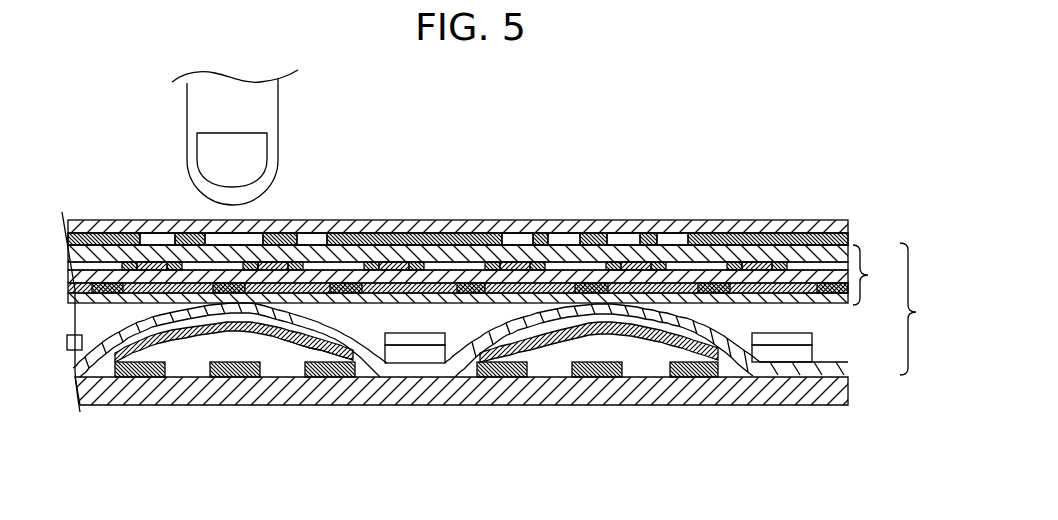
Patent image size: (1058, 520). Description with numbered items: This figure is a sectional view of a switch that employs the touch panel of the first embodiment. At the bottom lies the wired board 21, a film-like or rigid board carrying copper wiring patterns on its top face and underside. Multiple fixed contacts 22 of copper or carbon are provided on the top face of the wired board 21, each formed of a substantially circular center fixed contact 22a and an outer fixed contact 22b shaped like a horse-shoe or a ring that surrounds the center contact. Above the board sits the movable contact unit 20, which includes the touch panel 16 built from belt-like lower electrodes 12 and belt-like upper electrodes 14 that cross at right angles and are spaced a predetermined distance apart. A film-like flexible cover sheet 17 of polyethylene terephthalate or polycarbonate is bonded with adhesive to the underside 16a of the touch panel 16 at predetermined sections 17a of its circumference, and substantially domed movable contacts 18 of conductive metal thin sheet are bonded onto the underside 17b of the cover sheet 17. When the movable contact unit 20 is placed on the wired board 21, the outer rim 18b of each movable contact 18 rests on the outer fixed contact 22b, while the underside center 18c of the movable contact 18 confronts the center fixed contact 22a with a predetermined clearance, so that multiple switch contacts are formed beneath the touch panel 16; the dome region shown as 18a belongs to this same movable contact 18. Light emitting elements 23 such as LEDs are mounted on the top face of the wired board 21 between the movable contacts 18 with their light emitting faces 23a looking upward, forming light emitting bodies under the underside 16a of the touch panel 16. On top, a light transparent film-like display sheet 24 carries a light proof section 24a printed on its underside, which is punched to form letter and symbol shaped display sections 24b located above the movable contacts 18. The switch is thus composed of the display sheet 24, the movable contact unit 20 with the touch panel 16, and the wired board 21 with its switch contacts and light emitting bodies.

The lower electrodes 12 is at (583, 300).
The upper electrodes 14 is at (387, 240).
The touch panel 16 is at (486, 256).
The underside of touch panel 16a is at (773, 305).
The cover sheet 17 is at (740, 352).
The predetermined sections of cover sheet circumference 17a is at (460, 319).
The underside of cover sheet 17b is at (462, 368).
The movable contact 18 is at (218, 404).
The dome right portion 18a is at (293, 345).
The outer rim of movable contact 18b is at (118, 377).
The underside center of movable contact 18c is at (237, 335).
The movable contact unit 20 is at (510, 328).
The wired board 21 is at (263, 382).
The fixed contacts 22 is at (464, 435).
The center fixed contact 22a is at (592, 380).
The outer fixed contact 22b is at (681, 408).
The light emitting elements 23 is at (591, 320).
The light emitting faces 23a is at (427, 335).
The display sheet 24 is at (748, 230).
The light proof section 24a is at (450, 240).
The display sections 24b is at (622, 237).